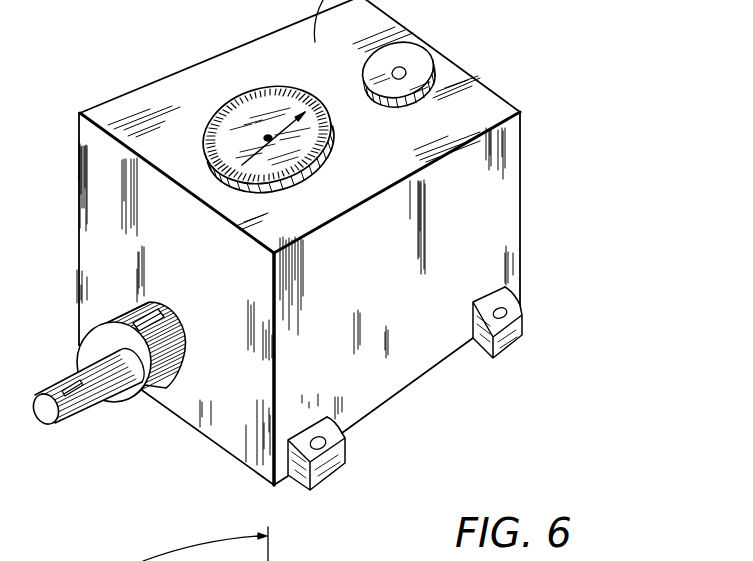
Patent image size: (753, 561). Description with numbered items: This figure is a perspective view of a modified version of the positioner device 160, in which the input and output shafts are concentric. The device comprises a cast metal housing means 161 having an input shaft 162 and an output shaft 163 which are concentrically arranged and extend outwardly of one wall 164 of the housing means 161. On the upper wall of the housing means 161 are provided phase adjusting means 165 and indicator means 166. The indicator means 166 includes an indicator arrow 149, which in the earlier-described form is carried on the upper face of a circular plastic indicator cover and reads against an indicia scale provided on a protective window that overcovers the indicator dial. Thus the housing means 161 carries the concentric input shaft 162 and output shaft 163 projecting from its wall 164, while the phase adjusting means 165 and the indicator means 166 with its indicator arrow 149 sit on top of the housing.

The indicator arrow 149 is at (254, 151).
The positioner device 160 is at (351, 280).
The housing means 161 is at (465, 237).
The input shaft 162 is at (78, 408).
The output shaft 163 is at (120, 393).
The wall of the housing means 164 is at (240, 417).
The phase adjusting means 165 is at (423, 42).
The indicator means 166 is at (342, 152).